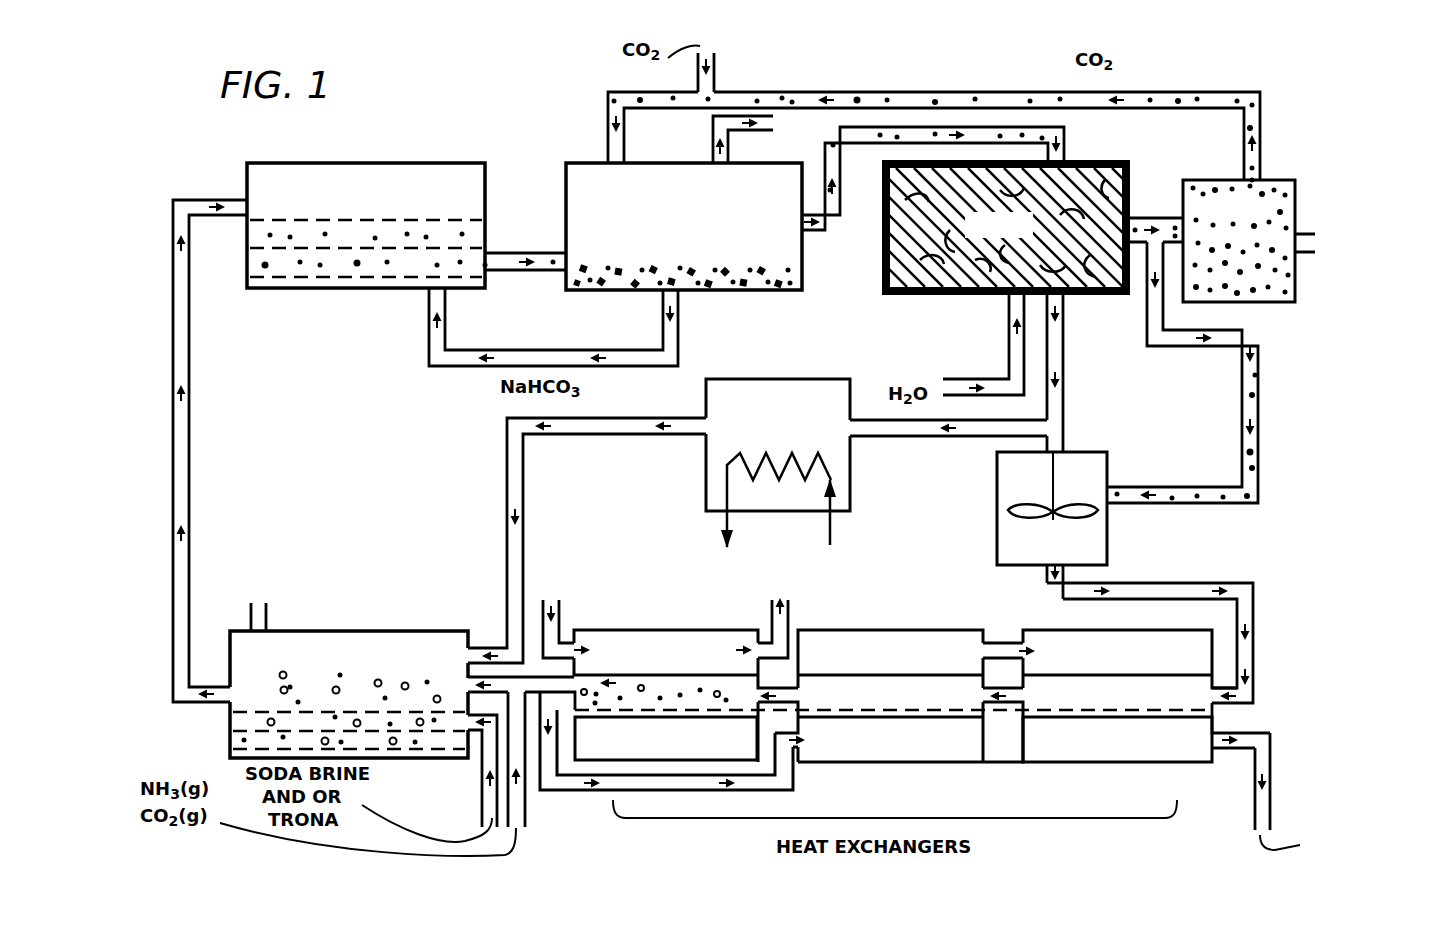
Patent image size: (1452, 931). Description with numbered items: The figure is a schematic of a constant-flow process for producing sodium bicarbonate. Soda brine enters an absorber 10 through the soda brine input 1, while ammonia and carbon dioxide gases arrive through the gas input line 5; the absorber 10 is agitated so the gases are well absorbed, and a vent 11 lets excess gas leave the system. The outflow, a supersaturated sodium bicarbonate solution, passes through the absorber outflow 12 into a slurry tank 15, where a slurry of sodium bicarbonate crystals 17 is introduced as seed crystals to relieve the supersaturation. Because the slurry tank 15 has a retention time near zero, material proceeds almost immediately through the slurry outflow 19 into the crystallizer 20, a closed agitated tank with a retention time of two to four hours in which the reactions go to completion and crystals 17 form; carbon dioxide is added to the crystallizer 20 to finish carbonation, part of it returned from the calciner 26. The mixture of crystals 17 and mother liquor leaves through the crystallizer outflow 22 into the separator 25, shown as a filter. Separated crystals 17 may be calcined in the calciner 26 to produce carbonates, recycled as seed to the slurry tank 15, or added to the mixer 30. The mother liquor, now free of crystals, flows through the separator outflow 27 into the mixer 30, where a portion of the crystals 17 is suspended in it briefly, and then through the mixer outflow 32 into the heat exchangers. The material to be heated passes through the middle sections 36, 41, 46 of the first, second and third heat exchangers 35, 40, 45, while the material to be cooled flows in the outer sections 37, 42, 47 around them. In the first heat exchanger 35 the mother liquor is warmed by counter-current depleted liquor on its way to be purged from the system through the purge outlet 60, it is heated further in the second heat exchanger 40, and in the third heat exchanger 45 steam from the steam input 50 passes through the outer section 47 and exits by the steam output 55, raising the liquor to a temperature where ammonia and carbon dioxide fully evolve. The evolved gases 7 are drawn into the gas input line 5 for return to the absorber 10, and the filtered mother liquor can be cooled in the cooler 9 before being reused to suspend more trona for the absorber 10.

The soda brine input 1 is at (489, 810).
The gas input line 5 is at (525, 824).
The evolved gases 7 is at (405, 686).
The cooler 9 is at (850, 472).
The absorber 10 is at (328, 631).
The vent 11 is at (266, 608).
The absorber outflow 12 is at (190, 442).
The slurry tank 15 is at (350, 163).
The crystals 17 is at (357, 263).
The slurry outflow 19 is at (520, 272).
The crystallizer 20 is at (638, 163).
The crystallizer outflow 22 is at (843, 193).
The separator 25 is at (905, 295).
The calciner 26 is at (1290, 180).
The separator outflow 27 is at (1063, 372).
The mixer 30 is at (997, 500).
The mixer outflow 32 is at (1255, 650).
The first heat exchanger 35 is at (1085, 630).
The middle section of first heat exchanger 36 is at (1150, 703).
The outer section of first heat exchanger 37 is at (1140, 660).
The second heat exchanger 40 is at (855, 630).
The middle section of second heat exchanger 41 is at (930, 700).
The outer section of second heat exchanger 42 is at (925, 660).
The third heat exchanger 45 is at (650, 630).
The middle section of third heat exchanger 46 is at (740, 703).
The outer section of third heat exchanger 47 is at (700, 655).
The steam input 50 is at (559, 606).
The steam output 55 is at (788, 608).
The purge outlet 60 is at (1270, 788).